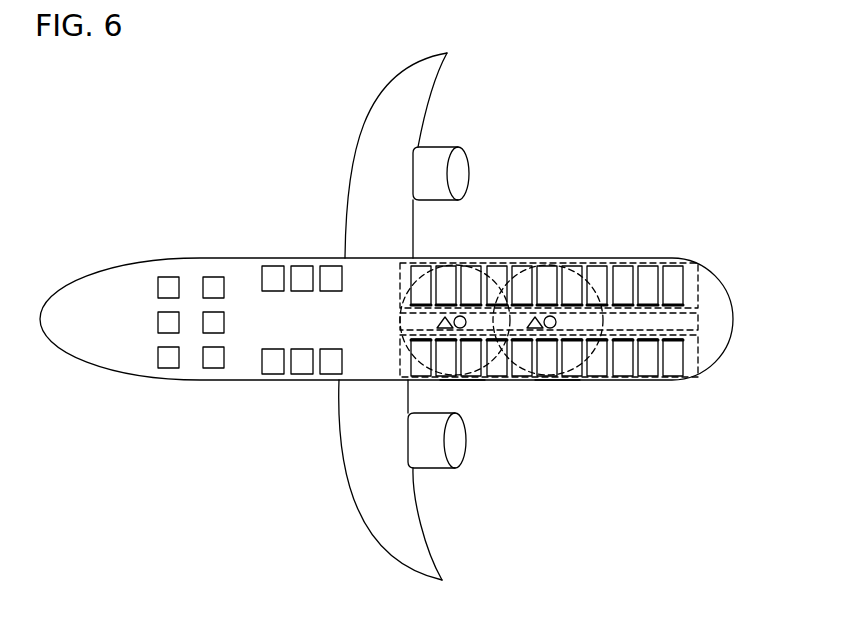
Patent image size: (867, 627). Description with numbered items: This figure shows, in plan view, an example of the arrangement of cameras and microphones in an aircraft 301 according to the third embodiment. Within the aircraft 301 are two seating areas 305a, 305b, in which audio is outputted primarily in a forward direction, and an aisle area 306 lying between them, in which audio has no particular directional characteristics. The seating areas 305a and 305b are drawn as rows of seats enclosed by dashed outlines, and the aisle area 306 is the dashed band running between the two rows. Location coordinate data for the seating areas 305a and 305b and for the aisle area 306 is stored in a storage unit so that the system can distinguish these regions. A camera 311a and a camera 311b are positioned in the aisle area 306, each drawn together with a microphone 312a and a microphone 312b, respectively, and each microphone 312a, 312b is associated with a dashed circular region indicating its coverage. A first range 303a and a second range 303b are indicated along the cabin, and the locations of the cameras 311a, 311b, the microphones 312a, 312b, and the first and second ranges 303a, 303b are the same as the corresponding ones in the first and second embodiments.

The aircraft 301 is at (118, 265).
The first range 303a is at (462, 380).
The second range 303b is at (558, 380).
The seating area 305a is at (697, 295).
The seating area 305b is at (698, 358).
The aisle area 306 is at (695, 322).
The camera 311a is at (447, 312).
The camera 311b is at (520, 313).
The microphone 312a is at (433, 305).
The microphone 312b is at (538, 268).